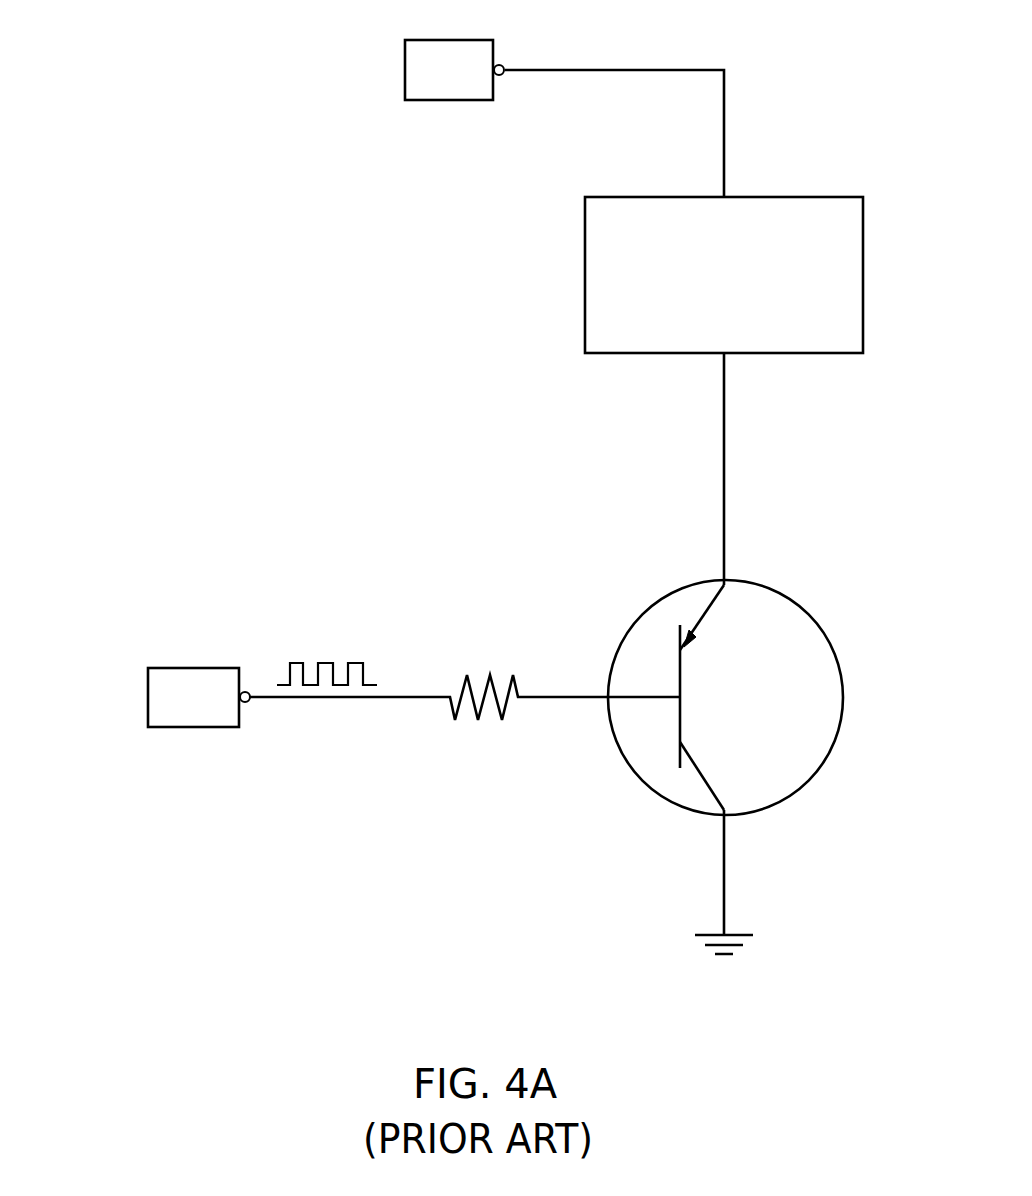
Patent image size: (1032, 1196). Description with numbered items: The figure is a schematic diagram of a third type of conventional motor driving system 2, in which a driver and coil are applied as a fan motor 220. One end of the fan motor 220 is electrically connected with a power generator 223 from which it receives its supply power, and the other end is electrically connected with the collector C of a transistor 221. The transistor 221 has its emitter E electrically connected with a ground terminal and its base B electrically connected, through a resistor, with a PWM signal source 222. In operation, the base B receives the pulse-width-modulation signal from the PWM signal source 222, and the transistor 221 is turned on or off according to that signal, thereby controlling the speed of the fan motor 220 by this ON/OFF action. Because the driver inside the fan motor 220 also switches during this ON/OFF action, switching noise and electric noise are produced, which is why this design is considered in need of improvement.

The motor driving system 2 is at (827, 30).
The fan motor 220 is at (797, 197).
The transistor 221 is at (795, 606).
The PWM signal source 222 is at (148, 697).
The power generator 223 is at (405, 70).